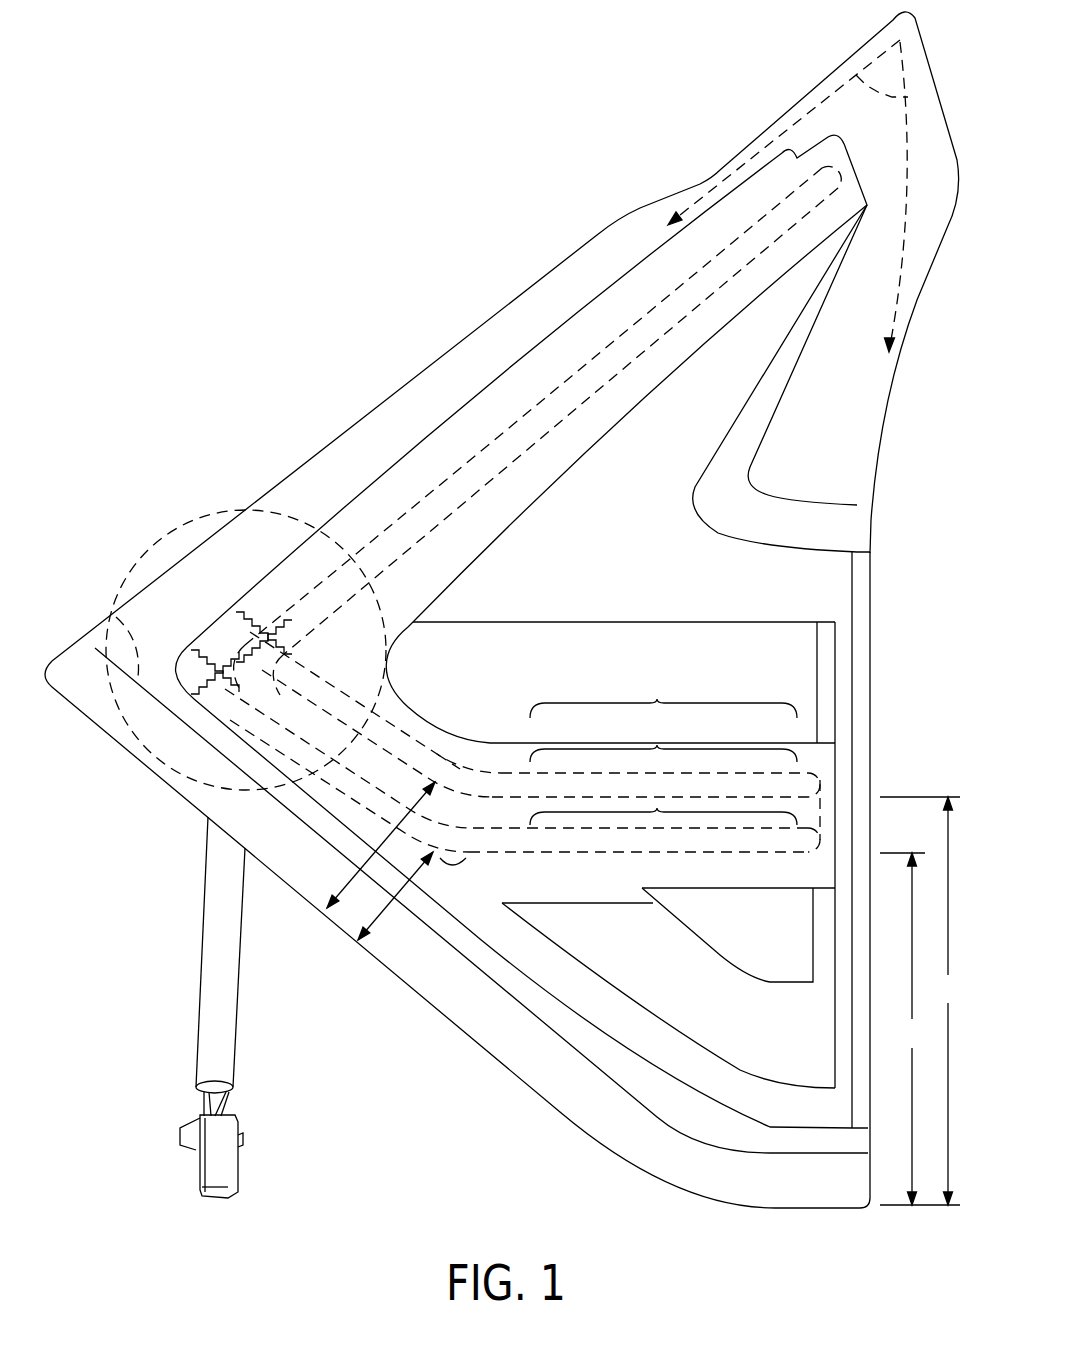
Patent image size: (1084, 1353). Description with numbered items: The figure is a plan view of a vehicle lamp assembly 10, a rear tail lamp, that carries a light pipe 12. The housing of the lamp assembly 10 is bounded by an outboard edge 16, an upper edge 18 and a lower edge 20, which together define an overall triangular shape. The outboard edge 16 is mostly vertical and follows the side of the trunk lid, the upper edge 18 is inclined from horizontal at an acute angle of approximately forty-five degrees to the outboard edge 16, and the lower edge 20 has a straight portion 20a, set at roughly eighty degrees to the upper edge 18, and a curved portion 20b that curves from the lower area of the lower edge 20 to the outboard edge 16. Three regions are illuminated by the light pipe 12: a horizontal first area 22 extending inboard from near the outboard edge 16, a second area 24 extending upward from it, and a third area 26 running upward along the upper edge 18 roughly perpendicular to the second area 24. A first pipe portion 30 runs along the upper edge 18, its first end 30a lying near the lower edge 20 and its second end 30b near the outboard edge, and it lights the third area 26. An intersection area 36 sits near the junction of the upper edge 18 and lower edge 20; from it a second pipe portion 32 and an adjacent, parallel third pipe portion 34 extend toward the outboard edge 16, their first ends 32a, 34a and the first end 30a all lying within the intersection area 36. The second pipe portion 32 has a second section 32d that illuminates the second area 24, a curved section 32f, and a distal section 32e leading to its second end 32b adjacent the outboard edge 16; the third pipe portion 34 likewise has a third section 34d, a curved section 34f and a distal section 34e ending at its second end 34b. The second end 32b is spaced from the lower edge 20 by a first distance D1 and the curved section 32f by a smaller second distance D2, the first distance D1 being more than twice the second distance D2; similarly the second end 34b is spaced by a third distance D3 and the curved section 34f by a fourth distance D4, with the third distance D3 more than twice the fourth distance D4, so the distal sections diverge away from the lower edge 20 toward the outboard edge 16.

The vehicle lamp assembly 10 is at (320, 292).
The light pipe 12 is at (360, 688).
The outboard edge 16 is at (873, 520).
The upper edge 18 is at (527, 293).
The lower edge 20 is at (428, 1002).
The straight portion 20a is at (305, 898).
The curved portion 20b is at (635, 1162).
The first area 22 is at (663, 696).
The second area 24 is at (405, 643).
The third area 26 is at (480, 389).
The first pipe portion 30 is at (586, 392).
The first end of first pipe portion 30a is at (213, 777).
The second end of first pipe portion 30b is at (832, 134).
The second pipe portion 32 is at (508, 787).
The first end of second pipe portion 32a is at (228, 612).
The second end of second pipe portion 32b is at (822, 776).
The second section of second pipe portion 32d is at (408, 727).
The distal section of second pipe portion 32e is at (663, 736).
The curved section of second pipe portion 32f is at (462, 802).
The third pipe portion 34 is at (600, 853).
The first end of third pipe portion 34a is at (198, 652).
The second end of third pipe portion 34b is at (822, 840).
The third section of third pipe portion 34d is at (308, 822).
The distal section of third pipe portion 34e is at (663, 802).
The curved section of third pipe portion 34f is at (447, 876).
The intersection area 36 is at (146, 535).
The first distance D1 is at (920, 1001).
The second distance D2 is at (381, 845).
The third distance D3 is at (902, 1029).
The fourth distance D4 is at (395, 896).